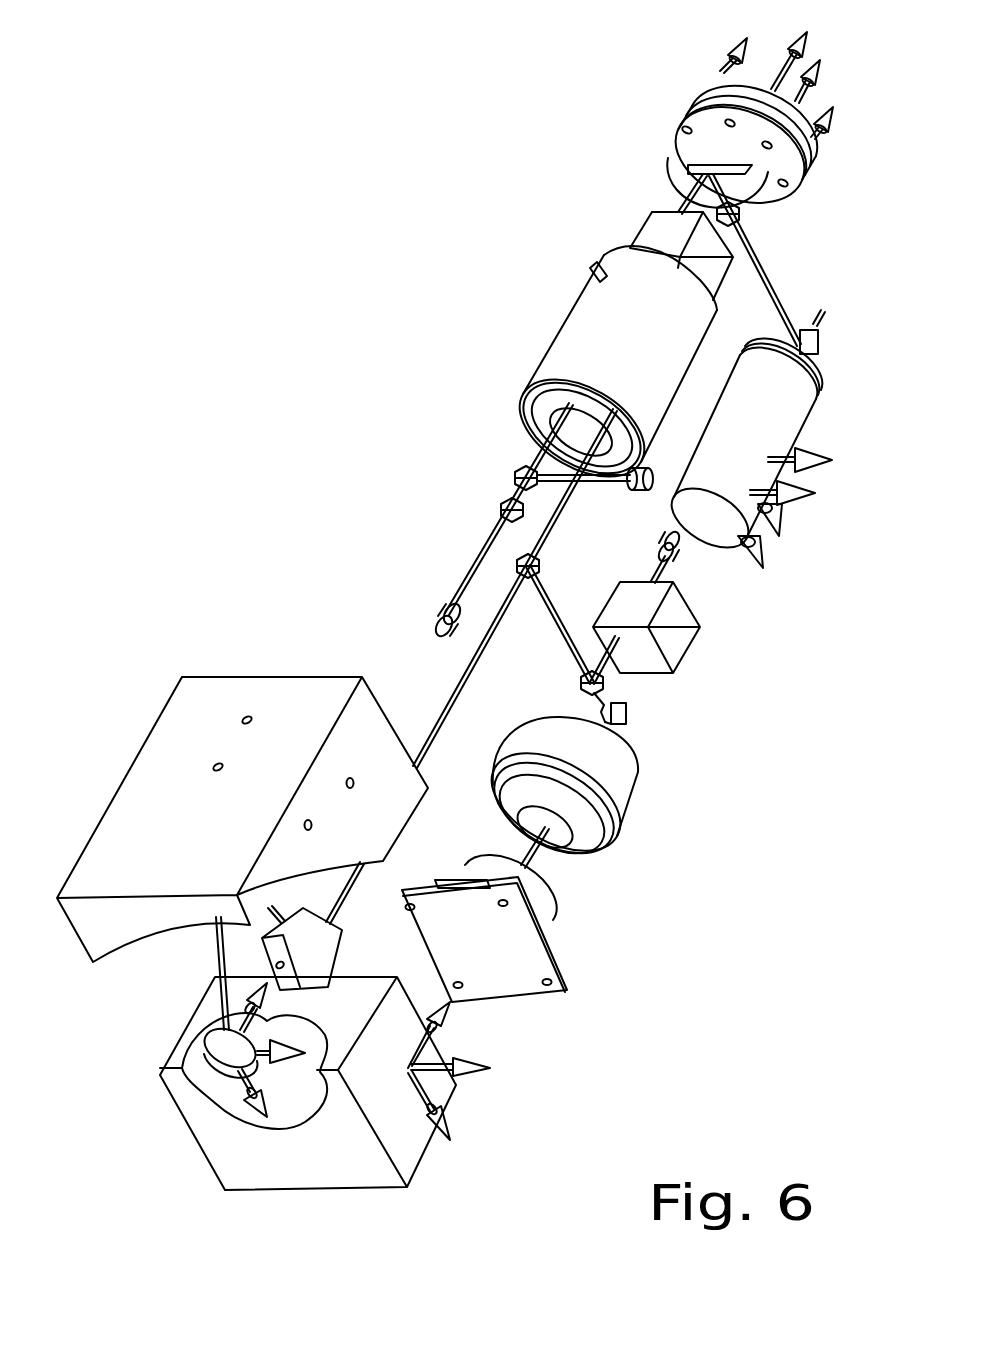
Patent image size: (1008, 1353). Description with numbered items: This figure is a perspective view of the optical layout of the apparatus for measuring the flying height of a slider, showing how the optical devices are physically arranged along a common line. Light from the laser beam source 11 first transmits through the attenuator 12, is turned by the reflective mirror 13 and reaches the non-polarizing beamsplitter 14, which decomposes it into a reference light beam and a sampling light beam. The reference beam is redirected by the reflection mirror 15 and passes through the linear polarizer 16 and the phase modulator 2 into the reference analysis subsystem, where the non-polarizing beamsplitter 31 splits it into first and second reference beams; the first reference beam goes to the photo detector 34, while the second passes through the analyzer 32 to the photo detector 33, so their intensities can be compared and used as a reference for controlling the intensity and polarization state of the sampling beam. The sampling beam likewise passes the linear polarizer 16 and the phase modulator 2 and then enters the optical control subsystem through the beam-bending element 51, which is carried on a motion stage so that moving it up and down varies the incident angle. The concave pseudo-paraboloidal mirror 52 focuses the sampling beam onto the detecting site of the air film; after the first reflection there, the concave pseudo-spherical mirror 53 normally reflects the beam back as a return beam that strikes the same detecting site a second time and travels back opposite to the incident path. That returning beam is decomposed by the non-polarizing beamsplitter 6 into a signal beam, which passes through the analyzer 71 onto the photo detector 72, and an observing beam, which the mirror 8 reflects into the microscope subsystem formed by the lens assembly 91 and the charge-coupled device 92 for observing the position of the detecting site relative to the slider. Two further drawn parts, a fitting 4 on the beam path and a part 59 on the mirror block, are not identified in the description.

The phase modulator 2 is at (577, 350).
The connecting nut 4 is at (520, 560).
The non-polarizing beamsplitter 6 is at (607, 680).
The mirror 8 is at (622, 715).
The laser beam source 11 is at (752, 452).
The attenuator 12 is at (820, 390).
The reflective mirror 13 is at (818, 332).
The non-polarizing beamsplitter 14 is at (741, 213).
The reflection mirror 15 is at (678, 155).
The linear polarizer 16 is at (648, 237).
The non-polarizing beamsplitter 31 is at (517, 478).
The analyzer 32 is at (503, 503).
The photo detector 33 is at (442, 613).
The photo detector 34 is at (630, 487).
The beam-bending element 51 is at (275, 950).
The concave pseudo-paraboloidal mirror 52 is at (168, 745).
The concave pseudo-spherical mirror 53 is at (407, 1145).
The disc 59 is at (220, 1047).
The analyzer 71 is at (673, 638).
The photo detector 72 is at (680, 552).
The lens assembly 91 is at (613, 787).
The charge-coupled device 92 is at (508, 977).